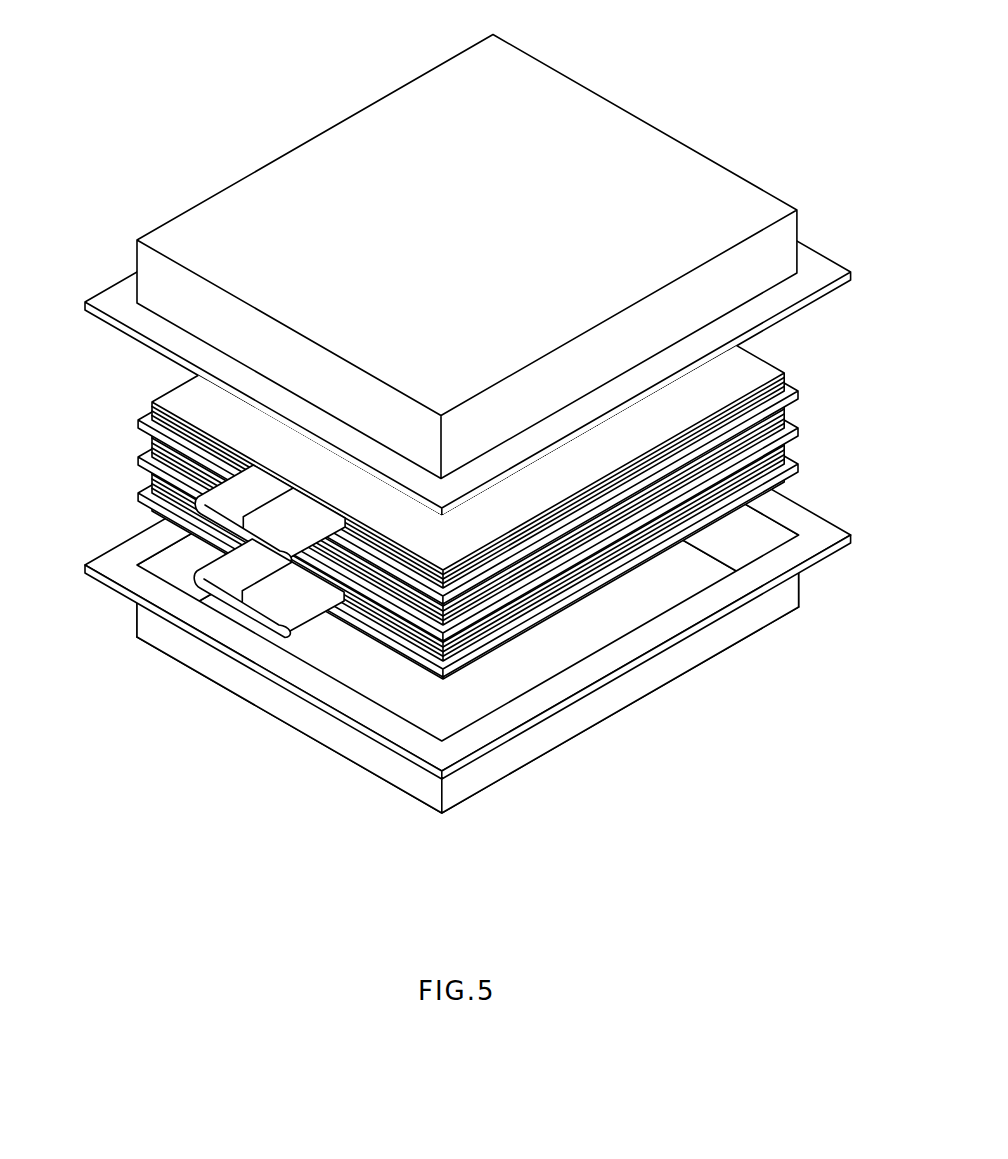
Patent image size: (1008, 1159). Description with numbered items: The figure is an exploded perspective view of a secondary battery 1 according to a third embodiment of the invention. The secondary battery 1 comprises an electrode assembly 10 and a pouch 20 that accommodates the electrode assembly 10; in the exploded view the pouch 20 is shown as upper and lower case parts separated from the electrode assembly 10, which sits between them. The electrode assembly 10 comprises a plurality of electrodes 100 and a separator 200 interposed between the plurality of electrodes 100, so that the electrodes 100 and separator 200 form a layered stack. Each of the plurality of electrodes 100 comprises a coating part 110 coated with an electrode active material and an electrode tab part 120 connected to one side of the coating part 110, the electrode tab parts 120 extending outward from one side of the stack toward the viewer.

The secondary battery 1 is at (462, 428).
The electrode assembly 10 is at (519, 522).
The pouch 20 is at (110, 305).
The electrodes 100 is at (303, 652).
The coating part 110 is at (412, 555).
The electrode tab part 120 is at (300, 533).
The separator 200 is at (463, 583).